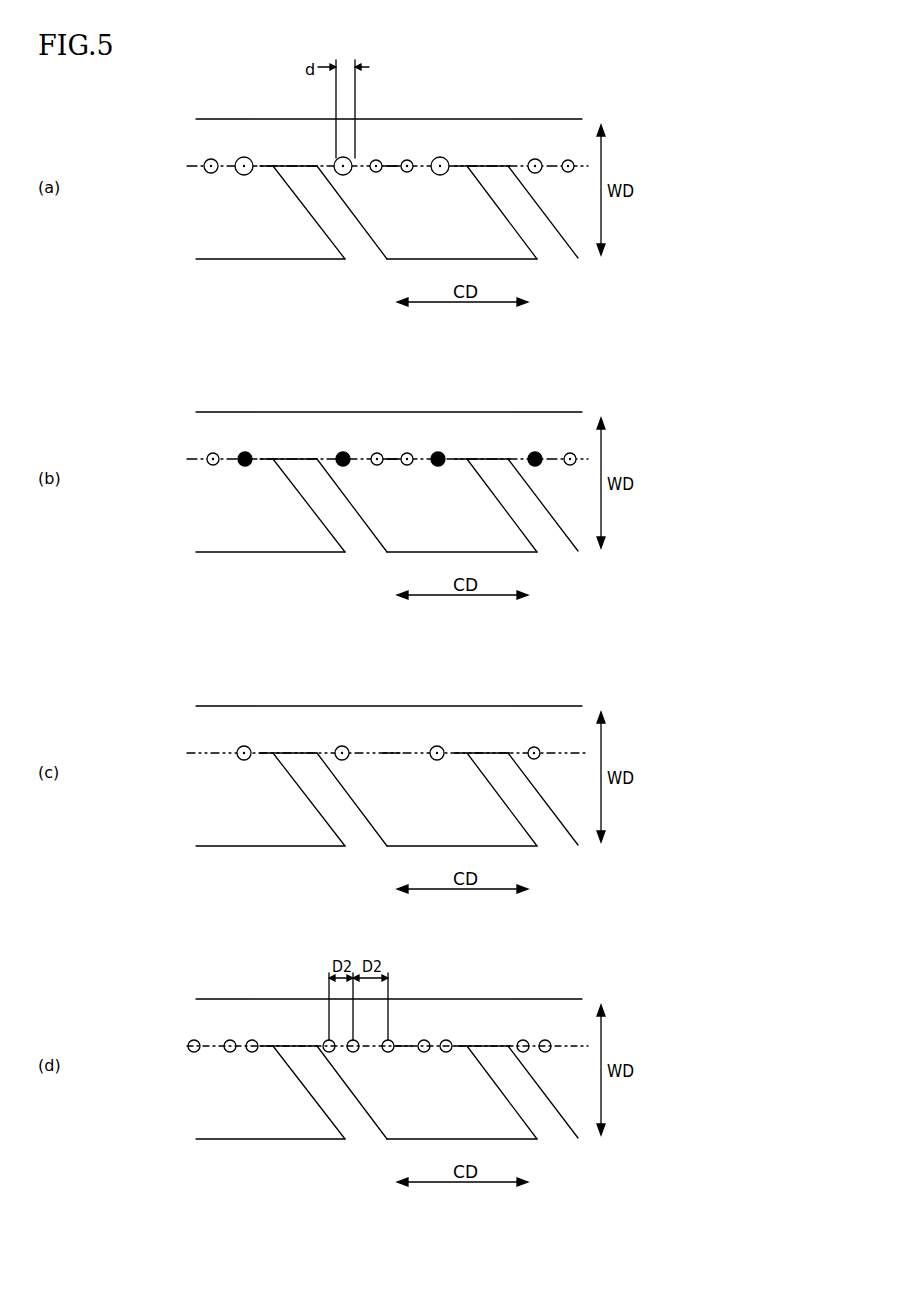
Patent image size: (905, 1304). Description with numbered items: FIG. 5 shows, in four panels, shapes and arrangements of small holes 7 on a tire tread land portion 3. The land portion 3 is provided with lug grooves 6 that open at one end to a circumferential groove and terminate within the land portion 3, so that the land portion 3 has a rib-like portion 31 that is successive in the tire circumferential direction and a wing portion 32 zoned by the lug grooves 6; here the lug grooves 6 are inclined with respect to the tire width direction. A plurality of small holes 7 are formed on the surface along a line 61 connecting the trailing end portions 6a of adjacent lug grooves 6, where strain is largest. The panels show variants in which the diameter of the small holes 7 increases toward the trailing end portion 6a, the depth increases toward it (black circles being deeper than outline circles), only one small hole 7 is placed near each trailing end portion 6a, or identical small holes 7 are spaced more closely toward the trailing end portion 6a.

The land portion 3 is at (176, 187).
The rib-like portion 31 is at (207, 146).
The wing portion 32 is at (203, 218).
The lug groove 6 is at (355, 245).
The trailing end portion 6a is at (297, 166).
The line 61 is at (398, 166).
The small hole 7 is at (437, 159).